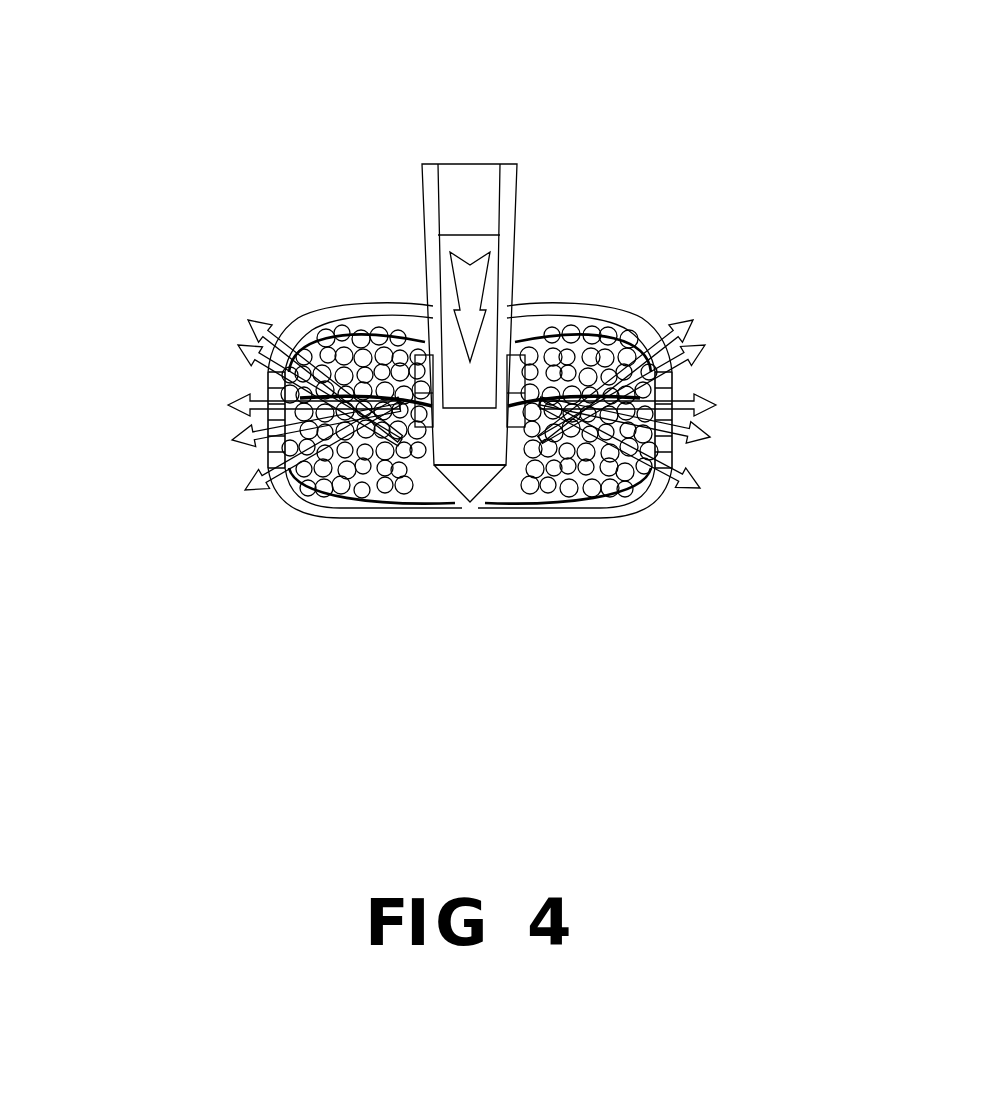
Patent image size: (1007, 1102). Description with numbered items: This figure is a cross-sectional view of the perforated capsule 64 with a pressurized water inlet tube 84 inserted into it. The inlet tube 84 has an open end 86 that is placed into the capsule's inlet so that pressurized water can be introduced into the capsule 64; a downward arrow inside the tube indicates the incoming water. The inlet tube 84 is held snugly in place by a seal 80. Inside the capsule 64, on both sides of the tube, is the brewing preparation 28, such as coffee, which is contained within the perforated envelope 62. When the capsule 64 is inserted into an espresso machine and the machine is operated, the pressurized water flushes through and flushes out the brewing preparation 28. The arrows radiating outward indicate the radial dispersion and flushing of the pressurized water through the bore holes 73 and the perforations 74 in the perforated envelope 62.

The pressurized water inlet tube 84 is at (369, 233).
The seal 80 is at (587, 211).
The perforated capsule 64 is at (266, 309).
The brewing preparation 28 is at (698, 311).
The perforations 74 is at (216, 449).
The open end 86 is at (653, 475).
The perforated envelope 62 is at (420, 509).
The bore holes 73 is at (557, 593).